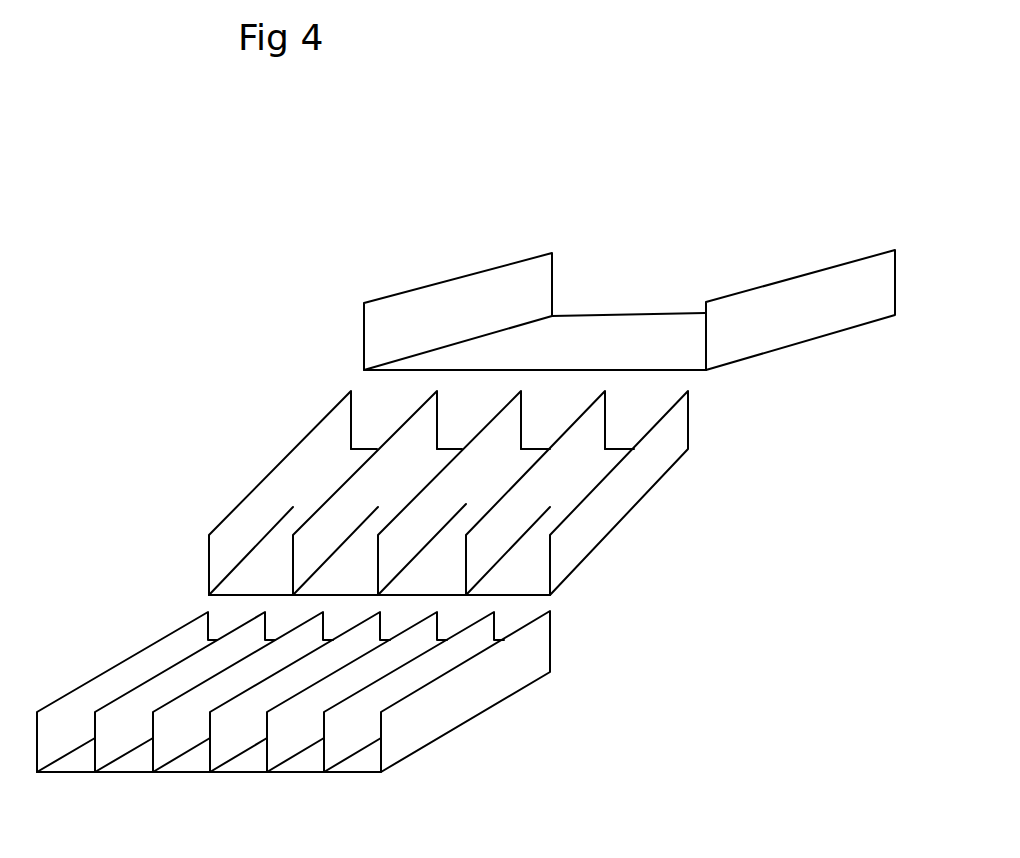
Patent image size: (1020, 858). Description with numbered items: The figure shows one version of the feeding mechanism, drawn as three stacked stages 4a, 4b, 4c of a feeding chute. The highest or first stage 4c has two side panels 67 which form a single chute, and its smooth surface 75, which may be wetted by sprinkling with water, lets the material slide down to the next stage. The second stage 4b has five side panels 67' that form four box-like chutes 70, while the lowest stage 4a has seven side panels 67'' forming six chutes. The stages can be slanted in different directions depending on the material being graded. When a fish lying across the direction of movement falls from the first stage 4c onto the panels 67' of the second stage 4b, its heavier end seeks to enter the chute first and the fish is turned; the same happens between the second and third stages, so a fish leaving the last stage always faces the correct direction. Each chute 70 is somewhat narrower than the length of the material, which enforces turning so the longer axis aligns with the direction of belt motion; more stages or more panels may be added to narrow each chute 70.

The lowest stage 4a is at (110, 637).
The second stage 4b is at (228, 443).
The first stage 4c is at (420, 240).
The chute 70 is at (318, 493).
The smooth surface of the top stage 75 is at (611, 325).
The side panel 67 is at (800, 326).
The side panel 67' is at (453, 517).
The side panel 67'' is at (293, 696).